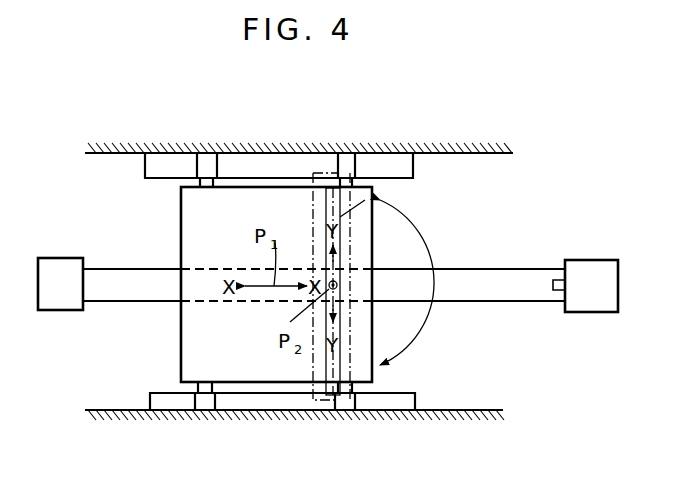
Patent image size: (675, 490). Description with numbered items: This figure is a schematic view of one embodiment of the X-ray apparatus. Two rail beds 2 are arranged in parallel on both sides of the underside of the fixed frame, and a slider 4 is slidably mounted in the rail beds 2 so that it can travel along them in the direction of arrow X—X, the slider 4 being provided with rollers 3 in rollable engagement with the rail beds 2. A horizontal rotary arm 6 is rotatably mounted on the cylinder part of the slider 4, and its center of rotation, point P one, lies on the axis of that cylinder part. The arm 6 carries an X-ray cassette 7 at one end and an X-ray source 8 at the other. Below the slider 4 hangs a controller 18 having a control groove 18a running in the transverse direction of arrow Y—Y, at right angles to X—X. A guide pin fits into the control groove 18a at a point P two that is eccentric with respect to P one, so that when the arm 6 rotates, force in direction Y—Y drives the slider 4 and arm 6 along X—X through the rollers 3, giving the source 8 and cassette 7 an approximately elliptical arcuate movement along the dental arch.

The rail bed 2 is at (385, 165).
The roller 3 is at (206, 160).
The slider 4 is at (181, 215).
The horizontal rotary arm 6 is at (475, 268).
The X-ray cassette 7 is at (52, 260).
The X-ray source 8 is at (590, 262).
The controller 18 is at (312, 172).
The control groove 18a is at (381, 199).